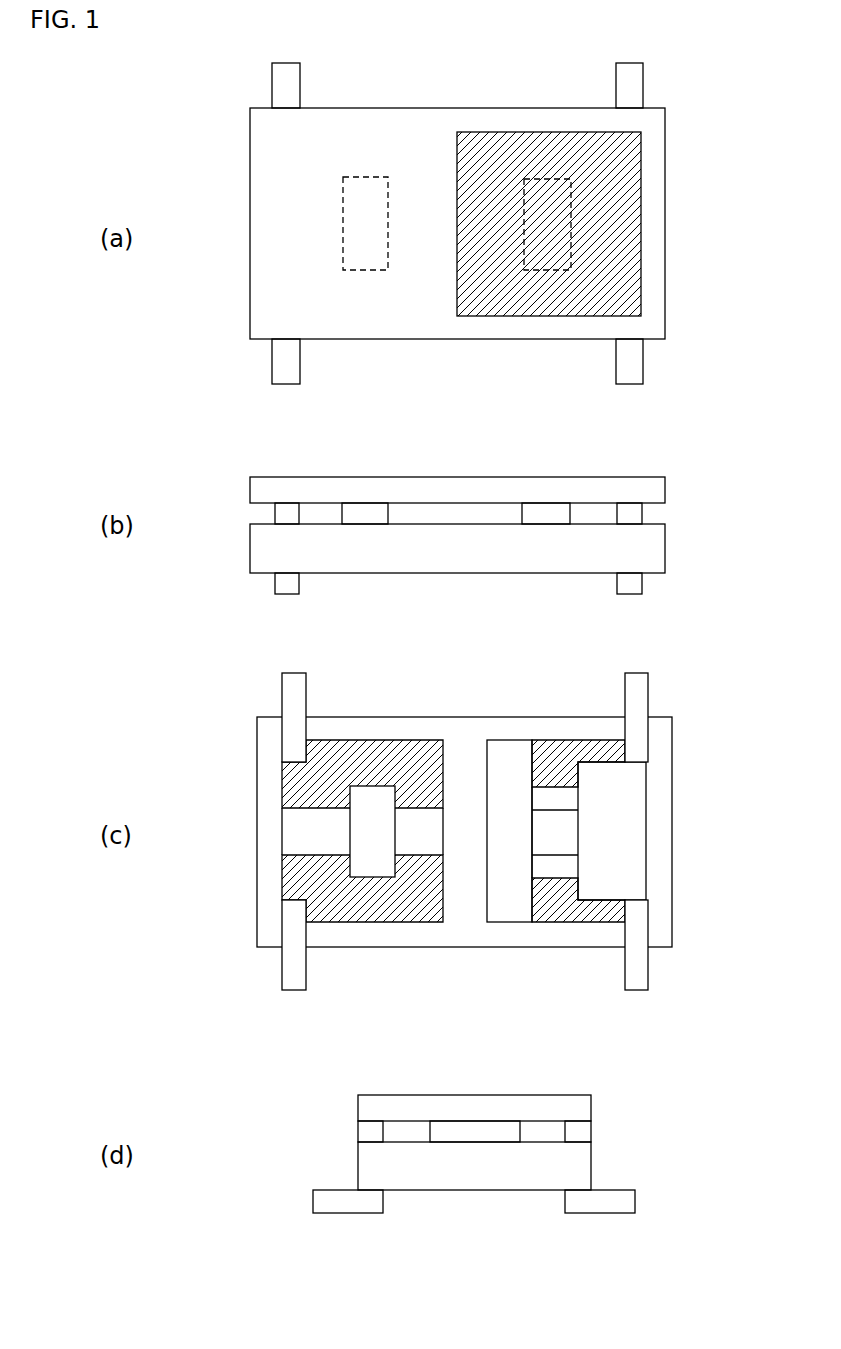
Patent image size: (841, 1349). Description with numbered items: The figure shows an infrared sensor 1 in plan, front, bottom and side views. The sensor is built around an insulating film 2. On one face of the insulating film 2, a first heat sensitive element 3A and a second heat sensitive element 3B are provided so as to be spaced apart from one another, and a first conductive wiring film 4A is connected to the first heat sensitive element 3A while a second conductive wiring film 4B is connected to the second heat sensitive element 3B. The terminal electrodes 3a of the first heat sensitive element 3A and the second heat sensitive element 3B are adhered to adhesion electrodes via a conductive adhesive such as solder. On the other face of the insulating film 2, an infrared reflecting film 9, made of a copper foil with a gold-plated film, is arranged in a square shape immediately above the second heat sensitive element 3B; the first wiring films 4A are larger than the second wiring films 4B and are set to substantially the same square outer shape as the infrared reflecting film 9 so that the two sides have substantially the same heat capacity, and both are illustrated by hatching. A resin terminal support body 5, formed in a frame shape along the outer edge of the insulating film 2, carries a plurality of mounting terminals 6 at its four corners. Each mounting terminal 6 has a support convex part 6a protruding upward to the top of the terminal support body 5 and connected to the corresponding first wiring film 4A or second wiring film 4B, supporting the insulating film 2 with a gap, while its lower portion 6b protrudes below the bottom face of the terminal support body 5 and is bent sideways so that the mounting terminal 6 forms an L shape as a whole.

The infrared sensor 1 is at (718, 112).
The insulating film 2 is at (665, 250).
The first heat sensitive element 3A is at (340, 222).
The second heat sensitive element 3B is at (576, 254).
The terminal electrodes 3a is at (385, 785).
The first conductive wiring film 4A is at (437, 742).
The second conductive wiring film 4B is at (605, 745).
The terminal support body 5 is at (665, 548).
The mounting terminals 6 is at (268, 76).
The support convex parts 6a is at (273, 512).
The lower portion 6b is at (287, 595).
The infrared reflecting film 9 is at (630, 183).